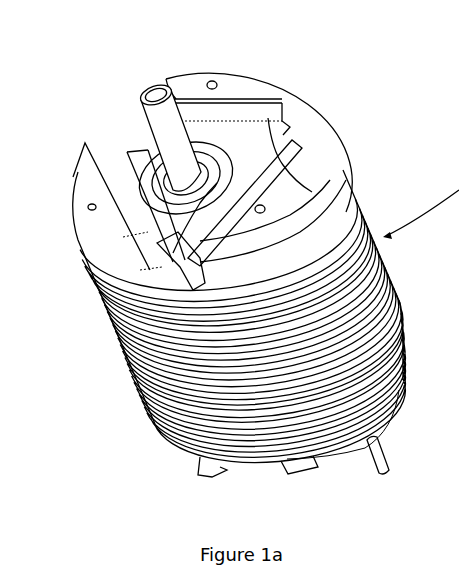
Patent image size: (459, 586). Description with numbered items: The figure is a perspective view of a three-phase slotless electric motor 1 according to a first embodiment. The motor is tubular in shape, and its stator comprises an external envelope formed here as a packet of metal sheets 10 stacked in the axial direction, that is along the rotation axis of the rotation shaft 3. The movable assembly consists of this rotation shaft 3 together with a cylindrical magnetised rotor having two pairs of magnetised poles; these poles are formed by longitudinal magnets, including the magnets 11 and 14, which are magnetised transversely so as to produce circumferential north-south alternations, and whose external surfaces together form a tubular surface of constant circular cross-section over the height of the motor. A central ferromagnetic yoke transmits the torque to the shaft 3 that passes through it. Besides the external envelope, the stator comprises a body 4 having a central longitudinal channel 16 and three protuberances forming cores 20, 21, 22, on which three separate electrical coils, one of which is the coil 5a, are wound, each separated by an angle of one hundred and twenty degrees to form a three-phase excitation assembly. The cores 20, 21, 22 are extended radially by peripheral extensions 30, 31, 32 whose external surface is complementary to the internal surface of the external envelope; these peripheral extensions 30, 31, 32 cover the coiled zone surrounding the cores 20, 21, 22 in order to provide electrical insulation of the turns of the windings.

The three-phase slotless electric motor 1 is at (112, 93).
The rotation shaft 3 is at (178, 132).
The body 4 is at (243, 110).
The electrical coil 5a is at (458, 340).
The packet of metal sheets 10 is at (360, 212).
The longitudinal magnet 11 is at (326, 453).
The longitudinal magnet 14 is at (413, 455).
The central longitudinal channel 16 is at (220, 160).
The core 20 is at (150, 253).
The core 21 is at (255, 185).
The core 22 is at (277, 113).
The peripheral extension 30 is at (110, 232).
The peripheral extension 31 is at (300, 188).
The peripheral extension 32 is at (225, 86).